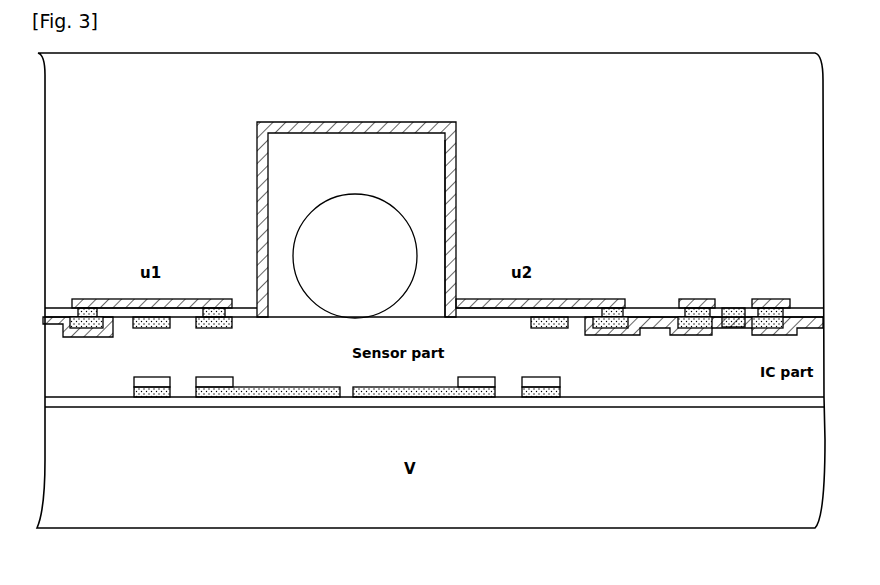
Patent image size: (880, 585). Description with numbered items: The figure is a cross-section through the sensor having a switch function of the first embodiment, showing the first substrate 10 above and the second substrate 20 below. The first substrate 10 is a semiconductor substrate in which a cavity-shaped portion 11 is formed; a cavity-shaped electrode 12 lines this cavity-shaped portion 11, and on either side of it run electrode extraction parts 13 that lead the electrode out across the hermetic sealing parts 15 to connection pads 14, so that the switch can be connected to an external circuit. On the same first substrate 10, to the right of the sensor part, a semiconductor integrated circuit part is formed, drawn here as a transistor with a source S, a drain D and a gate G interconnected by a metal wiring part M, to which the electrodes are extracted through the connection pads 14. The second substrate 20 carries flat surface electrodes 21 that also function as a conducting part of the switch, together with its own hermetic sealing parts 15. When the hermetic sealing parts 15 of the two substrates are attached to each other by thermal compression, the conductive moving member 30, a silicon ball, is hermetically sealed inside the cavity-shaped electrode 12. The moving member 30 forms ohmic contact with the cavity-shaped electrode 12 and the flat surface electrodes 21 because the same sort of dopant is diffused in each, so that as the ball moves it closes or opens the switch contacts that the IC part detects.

The first substrate 10 is at (724, 142).
The second substrate 20 is at (714, 493).
The cavity-shaped portion 11 is at (423, 166).
The cavity-shaped electrode 12 is at (456, 211).
The electrode extraction part 13 is at (190, 299).
The connection pad 14 is at (95, 328).
The hermetic sealing part 15 is at (156, 328).
The flat surface electrode 21 is at (380, 393).
The moving member 30 is at (355, 256).
The metal wiring part M is at (72, 337).
The drain D is at (700, 299).
The source S is at (772, 299).
The gate G is at (733, 327).